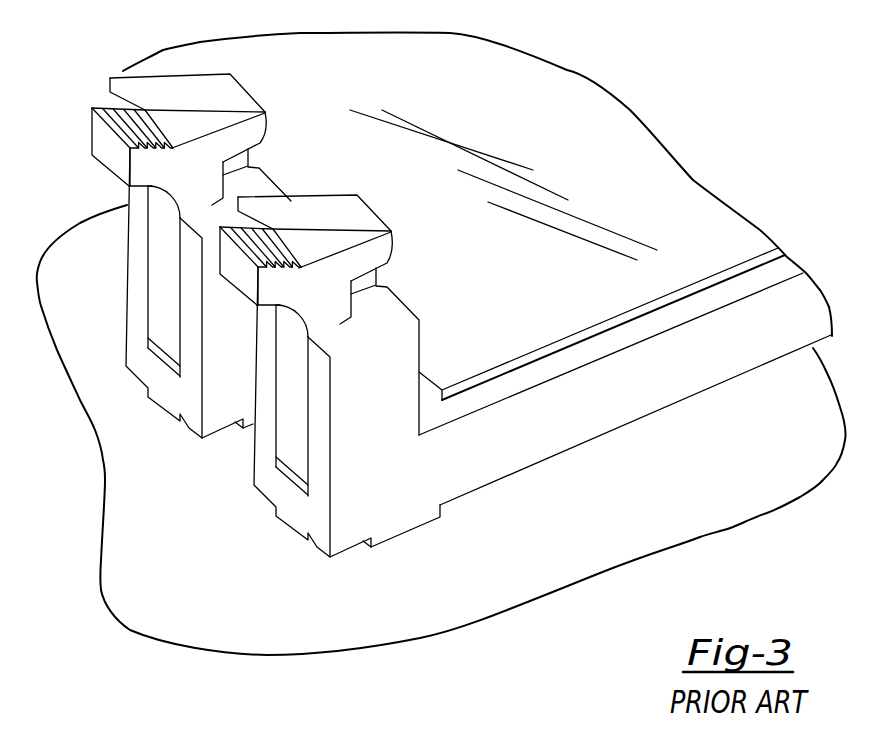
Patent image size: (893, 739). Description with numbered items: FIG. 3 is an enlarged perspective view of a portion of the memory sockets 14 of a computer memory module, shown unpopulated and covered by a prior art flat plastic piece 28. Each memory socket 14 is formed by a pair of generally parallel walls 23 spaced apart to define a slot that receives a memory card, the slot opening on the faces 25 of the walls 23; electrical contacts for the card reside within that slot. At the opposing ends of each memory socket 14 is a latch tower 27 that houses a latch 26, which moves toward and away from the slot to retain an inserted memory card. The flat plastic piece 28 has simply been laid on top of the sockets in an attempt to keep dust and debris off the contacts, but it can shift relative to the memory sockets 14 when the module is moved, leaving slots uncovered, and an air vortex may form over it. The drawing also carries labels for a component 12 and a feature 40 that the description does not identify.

The body / instrument panel 12 is at (767, 500).
The memory socket 14 is at (208, 417).
The walls 23 is at (823, 295).
The faces 25 is at (625, 337).
The latch 26 is at (235, 98).
The latch tower 27 is at (135, 270).
The flat plastic piece 28 is at (563, 93).
The serrations / ribs 40 is at (272, 128).